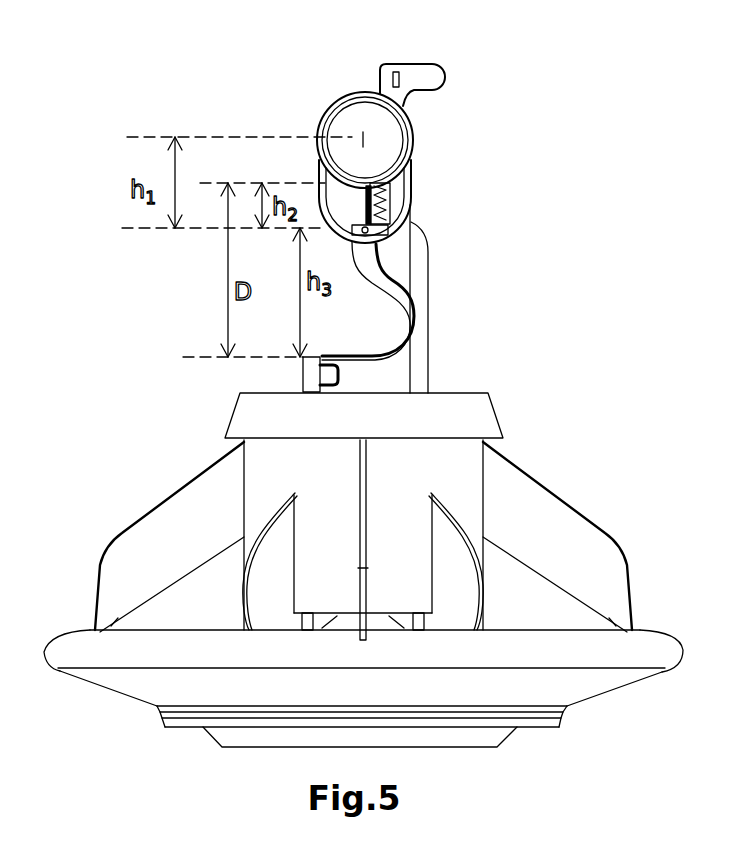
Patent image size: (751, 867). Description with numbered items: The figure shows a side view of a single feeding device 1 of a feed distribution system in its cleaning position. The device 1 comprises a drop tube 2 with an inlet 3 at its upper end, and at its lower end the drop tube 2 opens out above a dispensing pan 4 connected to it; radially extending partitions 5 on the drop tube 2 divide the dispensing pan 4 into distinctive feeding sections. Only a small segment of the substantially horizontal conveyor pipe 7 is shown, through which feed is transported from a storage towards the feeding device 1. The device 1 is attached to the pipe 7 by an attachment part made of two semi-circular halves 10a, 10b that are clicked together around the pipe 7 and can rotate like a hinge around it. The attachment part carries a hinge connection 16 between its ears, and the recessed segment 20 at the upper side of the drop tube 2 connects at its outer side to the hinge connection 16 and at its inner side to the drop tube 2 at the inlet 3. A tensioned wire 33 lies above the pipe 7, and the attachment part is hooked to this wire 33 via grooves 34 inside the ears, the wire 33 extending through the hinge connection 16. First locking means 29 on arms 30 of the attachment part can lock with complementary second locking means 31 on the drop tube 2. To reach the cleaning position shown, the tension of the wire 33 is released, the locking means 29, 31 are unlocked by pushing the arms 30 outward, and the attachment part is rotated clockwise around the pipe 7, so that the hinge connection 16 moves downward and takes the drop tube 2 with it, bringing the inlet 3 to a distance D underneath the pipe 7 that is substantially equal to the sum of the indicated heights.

The feeding device 1 is at (648, 322).
The drop tube 2 is at (433, 372).
The inlet 3 is at (362, 350).
The dispensing pan 4 is at (120, 677).
The partitions 5 is at (153, 530).
The conveyor pipe 7 is at (378, 147).
The semi-circular half 10a is at (393, 201).
The semi-circular half 10b is at (333, 108).
The hinge connection 16 is at (396, 292).
The recessed segment 20 is at (418, 281).
The first locking means 29 is at (399, 68).
The arms 30 is at (434, 78).
The second locking means 31 is at (322, 375).
The tensioned wire 33 is at (366, 301).
The grooves 34 is at (382, 236).